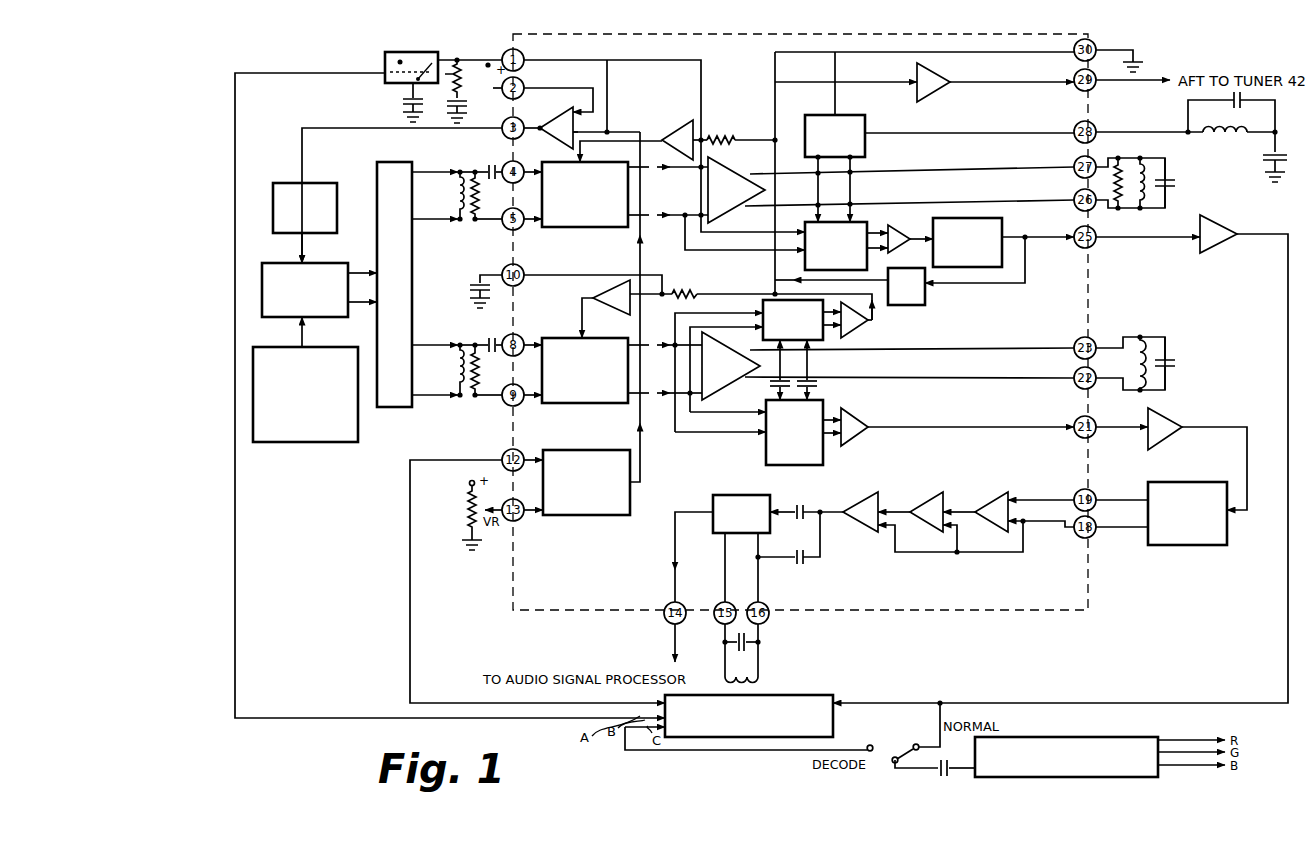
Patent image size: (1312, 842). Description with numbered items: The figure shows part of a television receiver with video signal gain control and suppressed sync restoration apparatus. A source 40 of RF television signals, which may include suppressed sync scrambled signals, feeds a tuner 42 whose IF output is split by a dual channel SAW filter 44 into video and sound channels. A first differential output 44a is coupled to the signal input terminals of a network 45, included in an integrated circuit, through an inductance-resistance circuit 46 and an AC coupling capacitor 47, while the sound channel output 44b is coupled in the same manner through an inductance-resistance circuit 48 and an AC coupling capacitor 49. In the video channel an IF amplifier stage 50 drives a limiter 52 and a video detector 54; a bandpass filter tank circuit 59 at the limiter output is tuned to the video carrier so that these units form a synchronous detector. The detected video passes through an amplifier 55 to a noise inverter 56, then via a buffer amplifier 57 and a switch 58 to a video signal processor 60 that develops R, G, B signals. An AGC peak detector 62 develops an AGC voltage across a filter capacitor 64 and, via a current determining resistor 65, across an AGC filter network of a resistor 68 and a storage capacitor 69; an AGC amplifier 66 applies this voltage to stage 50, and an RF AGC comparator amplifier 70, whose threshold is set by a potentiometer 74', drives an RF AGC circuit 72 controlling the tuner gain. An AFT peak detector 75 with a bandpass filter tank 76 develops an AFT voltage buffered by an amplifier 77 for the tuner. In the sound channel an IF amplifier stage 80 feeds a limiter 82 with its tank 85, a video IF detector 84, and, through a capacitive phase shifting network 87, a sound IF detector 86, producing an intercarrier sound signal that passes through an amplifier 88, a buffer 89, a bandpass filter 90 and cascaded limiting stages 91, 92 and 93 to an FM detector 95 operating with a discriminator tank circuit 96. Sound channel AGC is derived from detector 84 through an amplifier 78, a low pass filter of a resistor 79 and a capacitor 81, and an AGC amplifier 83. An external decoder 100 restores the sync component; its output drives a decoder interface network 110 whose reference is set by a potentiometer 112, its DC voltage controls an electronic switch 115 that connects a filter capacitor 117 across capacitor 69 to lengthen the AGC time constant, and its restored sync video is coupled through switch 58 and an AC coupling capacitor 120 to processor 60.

The electronic switch 115 is at (385, 60).
The filter capacitor 117 is at (403, 102).
The resistor 68 is at (448, 79).
The storage capacitor 69 is at (447, 114).
The potentiometer 74' is at (550, 123).
The RF AGC comparator amplifier 70 is at (598, 127).
The AGC amplifier 66 is at (691, 122).
The current determining resistor 65 is at (714, 136).
The buffer amplifier 77 is at (940, 70).
The filter capacitor 64 is at (1140, 56).
The AFT peak detector 75 is at (865, 152).
The bandpass filter tank 76 is at (1237, 137).
The bandpass filter tank circuit 59 is at (1150, 183).
The RF AGC circuit 72 is at (310, 183).
The SAW filter 44 is at (377, 170).
The first differential output 44a is at (436, 201).
The inductance-resistance circuit 46 is at (458, 212).
The AC coupling capacitor 47 is at (489, 168).
The network 45 is at (512, 248).
The IF amplifier stage 50 is at (605, 228).
The limiter 52 is at (735, 214).
The video detector 54 is at (805, 230).
The amplifier 55 is at (893, 226).
The noise inverter 56 is at (1002, 222).
The buffer amplifier 57 is at (1226, 226).
The capacitor 81 is at (470, 287).
The resistor 79 is at (680, 293).
The video IF detector 84 is at (783, 300).
The amplifier 78 is at (858, 328).
The AGC peak detector 62 is at (925, 303).
The AGC amplifier 83 is at (618, 313).
The limiter 82 is at (730, 348).
The capacitive phase shifting network 87 is at (904, 389).
The bandpass filter tank 85 is at (1153, 363).
The tuner 42 is at (325, 318).
The source 40 is at (338, 443).
The differential output 44b is at (436, 374).
The inductance-resistance circuit 48 is at (467, 386).
The AC coupling capacitor 49 is at (490, 339).
The IF amplifier stage 80 is at (602, 408).
The amplifier 88 is at (856, 418).
The sound IF detector 86 is at (823, 458).
The buffer 89 is at (1172, 418).
The decoder interface network 110 is at (572, 450).
The potentiometer 112 is at (456, 516).
The FM detector 95 is at (733, 493).
The progressive limiting stage 93 is at (866, 494).
The progressive limiting stage 92 is at (920, 494).
The progressive limiting stage 91 is at (1008, 492).
The 4.5 MHz bandpass filter 90 is at (1200, 545).
The discriminator tank circuit 96 is at (761, 658).
The decoder unit 100 is at (798, 695).
The switch 58 is at (893, 739).
The video signal processor 60 is at (1130, 737).
The AC coupling capacitor 120 is at (938, 775).